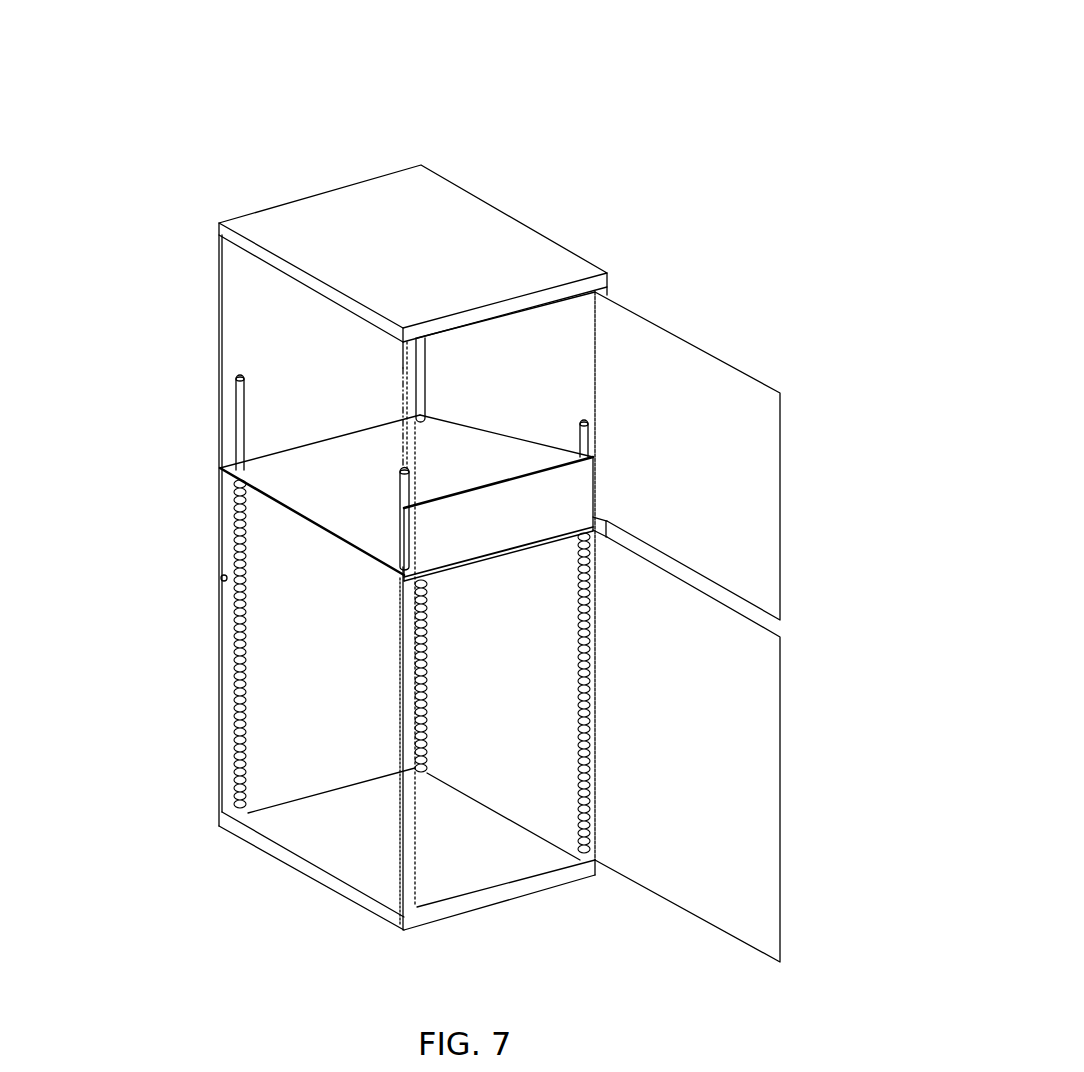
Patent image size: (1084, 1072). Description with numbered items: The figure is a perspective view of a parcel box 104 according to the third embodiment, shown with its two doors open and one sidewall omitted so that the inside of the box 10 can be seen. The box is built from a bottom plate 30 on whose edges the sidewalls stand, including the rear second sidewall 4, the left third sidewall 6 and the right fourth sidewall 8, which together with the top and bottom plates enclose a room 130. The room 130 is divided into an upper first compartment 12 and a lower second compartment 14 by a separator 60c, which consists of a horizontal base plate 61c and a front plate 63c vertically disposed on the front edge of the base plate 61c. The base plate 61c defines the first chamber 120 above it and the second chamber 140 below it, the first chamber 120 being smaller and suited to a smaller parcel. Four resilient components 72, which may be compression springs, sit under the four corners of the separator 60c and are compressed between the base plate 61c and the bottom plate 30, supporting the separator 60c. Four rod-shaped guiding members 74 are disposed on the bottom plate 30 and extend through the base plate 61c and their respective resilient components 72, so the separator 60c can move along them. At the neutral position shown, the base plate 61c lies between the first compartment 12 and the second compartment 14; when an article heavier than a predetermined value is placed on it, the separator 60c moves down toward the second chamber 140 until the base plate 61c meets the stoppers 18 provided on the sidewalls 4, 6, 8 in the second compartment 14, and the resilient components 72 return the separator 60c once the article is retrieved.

The parcel box 104 is at (218, 124).
The cabinet 10 is at (205, 275).
The first compartment 12 is at (218, 312).
The second sidewall 4 is at (267, 320).
The fourth sidewall 8 is at (562, 337).
The guiding members 74 is at (240, 418).
The resilient components 72 is at (235, 533).
The stoppers 18 is at (218, 580).
The second compartment 14 is at (218, 677).
The third sidewall 6 is at (292, 742).
The bottom plate 30 is at (360, 853).
The separator 60c is at (462, 100).
The base plate 61c is at (347, 470).
The front plate 63c is at (465, 520).
The first chamber 120 is at (575, 390).
The room 130 is at (733, 627).
The second chamber 140 is at (557, 699).